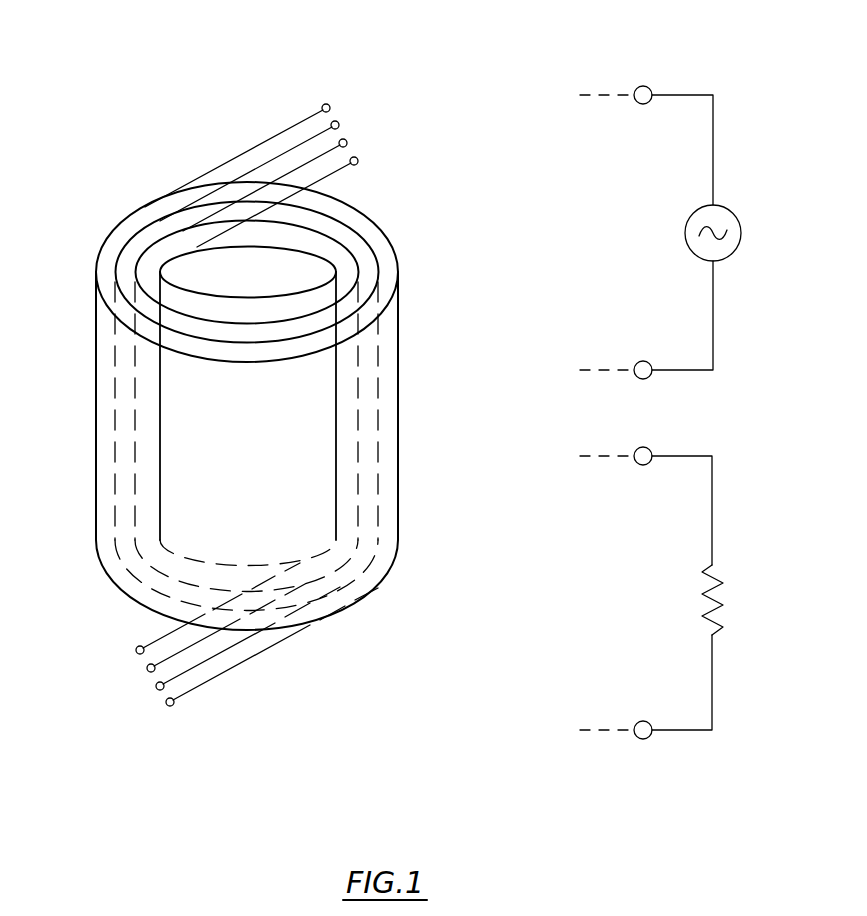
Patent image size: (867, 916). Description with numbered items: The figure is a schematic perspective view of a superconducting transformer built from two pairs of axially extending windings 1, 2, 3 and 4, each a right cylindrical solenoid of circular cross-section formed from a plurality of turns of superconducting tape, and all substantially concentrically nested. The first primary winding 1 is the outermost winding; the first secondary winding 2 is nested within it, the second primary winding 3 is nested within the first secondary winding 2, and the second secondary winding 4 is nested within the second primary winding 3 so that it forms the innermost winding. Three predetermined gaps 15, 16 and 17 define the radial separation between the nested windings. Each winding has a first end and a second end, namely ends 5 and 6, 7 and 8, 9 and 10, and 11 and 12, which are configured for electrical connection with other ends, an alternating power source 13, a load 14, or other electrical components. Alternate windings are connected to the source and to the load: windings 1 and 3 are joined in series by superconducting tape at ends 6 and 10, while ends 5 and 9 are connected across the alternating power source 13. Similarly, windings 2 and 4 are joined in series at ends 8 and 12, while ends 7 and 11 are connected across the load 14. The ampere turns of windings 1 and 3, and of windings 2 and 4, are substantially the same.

The first primary winding 1 is at (316, 346).
The first secondary winding 2 is at (292, 367).
The second primary winding 3 is at (258, 406).
The second secondary winding 4 is at (198, 310).
The first end of winding 1 5 is at (280, 132).
The second end of winding 1 6 is at (158, 640).
The first end of winding 2 7 is at (315, 133).
The second end of winding 2 8 is at (182, 658).
The first end of winding 3 9 is at (327, 148).
The second end of winding 3 10 is at (185, 672).
The first end of winding 4 11 is at (337, 167).
The second end of winding 4 12 is at (220, 678).
The alternating power source 13 is at (675, 200).
The load 14 is at (680, 615).
The predetermined gap 15 is at (140, 188).
The predetermined gap 16 is at (128, 228).
The predetermined gap 17 is at (353, 298).